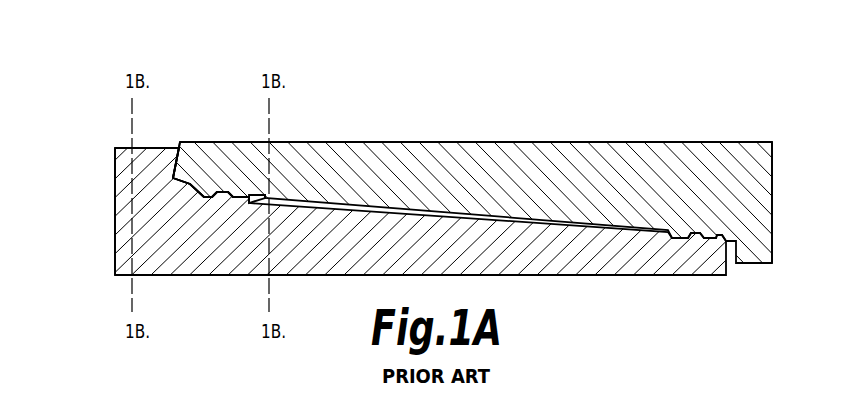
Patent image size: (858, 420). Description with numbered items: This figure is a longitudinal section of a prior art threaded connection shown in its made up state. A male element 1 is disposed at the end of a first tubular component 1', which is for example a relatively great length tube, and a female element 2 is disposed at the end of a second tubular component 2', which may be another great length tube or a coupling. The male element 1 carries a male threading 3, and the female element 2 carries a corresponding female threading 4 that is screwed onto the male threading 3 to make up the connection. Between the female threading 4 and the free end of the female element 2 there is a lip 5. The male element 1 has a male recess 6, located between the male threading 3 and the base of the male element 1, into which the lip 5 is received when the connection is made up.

The male element 1 is at (421, 229).
The female element 2 is at (460, 176).
The male threading 3 is at (250, 206).
The female threading 4 is at (238, 196).
The lip 5 is at (177, 182).
The male recess 6 is at (177, 182).
The first tubular component 1' is at (89, 211).
The second tubular component 2' is at (796, 202).